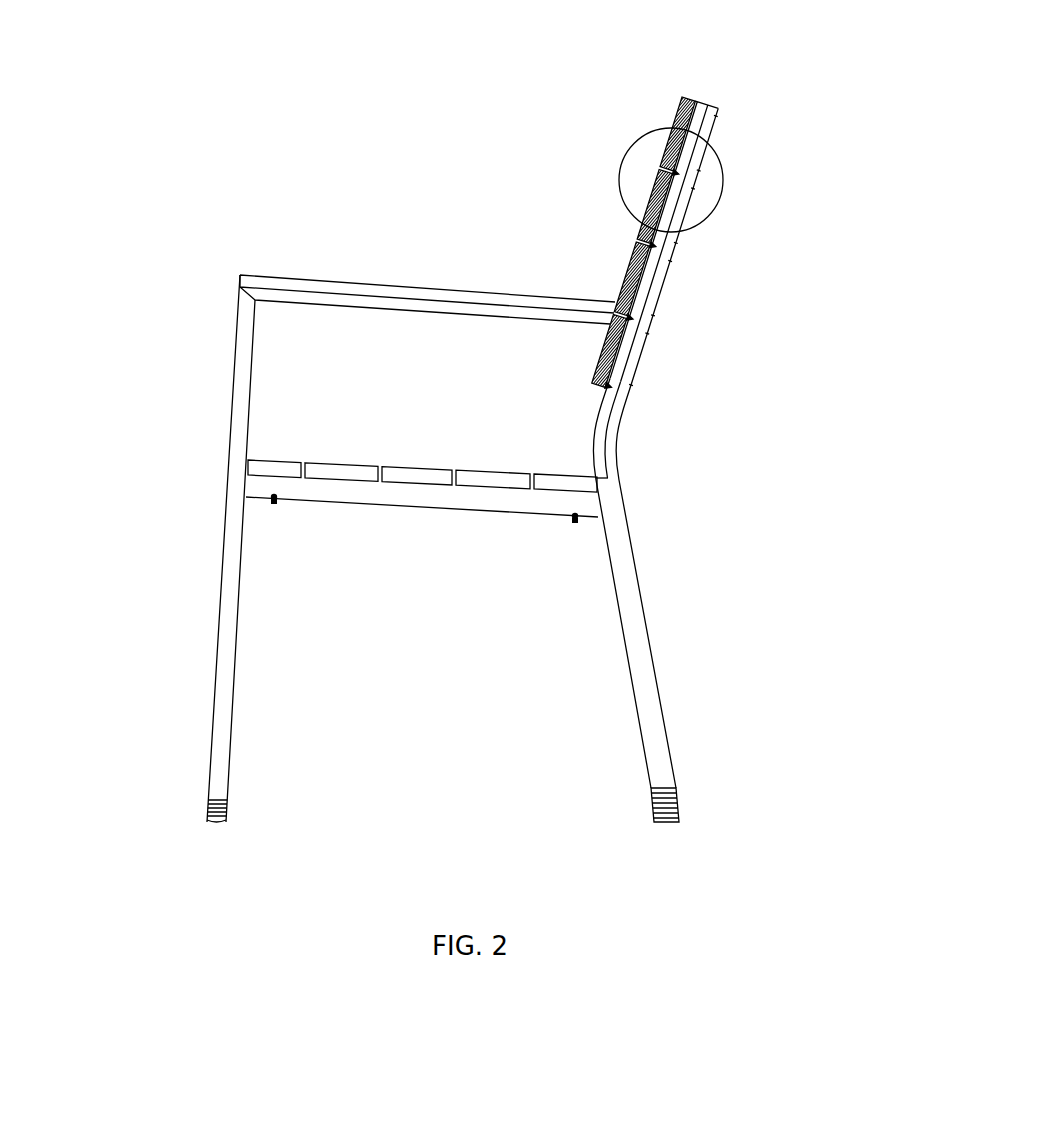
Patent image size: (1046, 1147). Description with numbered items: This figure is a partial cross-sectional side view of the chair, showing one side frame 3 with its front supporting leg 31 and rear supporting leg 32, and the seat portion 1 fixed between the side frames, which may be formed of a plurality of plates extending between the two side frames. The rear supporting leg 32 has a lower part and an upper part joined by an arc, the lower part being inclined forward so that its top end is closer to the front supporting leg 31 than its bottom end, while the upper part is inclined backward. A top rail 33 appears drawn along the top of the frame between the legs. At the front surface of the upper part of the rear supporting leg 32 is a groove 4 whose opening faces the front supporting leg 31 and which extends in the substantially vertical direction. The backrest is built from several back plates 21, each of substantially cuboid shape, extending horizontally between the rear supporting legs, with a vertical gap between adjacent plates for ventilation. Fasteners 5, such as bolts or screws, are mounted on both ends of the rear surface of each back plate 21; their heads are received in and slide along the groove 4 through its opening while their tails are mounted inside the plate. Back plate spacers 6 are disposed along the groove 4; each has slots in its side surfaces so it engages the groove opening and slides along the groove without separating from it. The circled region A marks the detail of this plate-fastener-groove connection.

The seat portion 1 is at (403, 480).
The side frame 3 is at (200, 523).
The front supporting leg 31 is at (223, 658).
The rear supporting leg 32 is at (613, 500).
The armrest rail 33 is at (405, 288).
The groove 4 is at (702, 115).
The back plate 21 is at (607, 336).
The fastener 5 is at (632, 380).
The back plate spacer 6 is at (606, 388).
The detail portion A is at (713, 150).